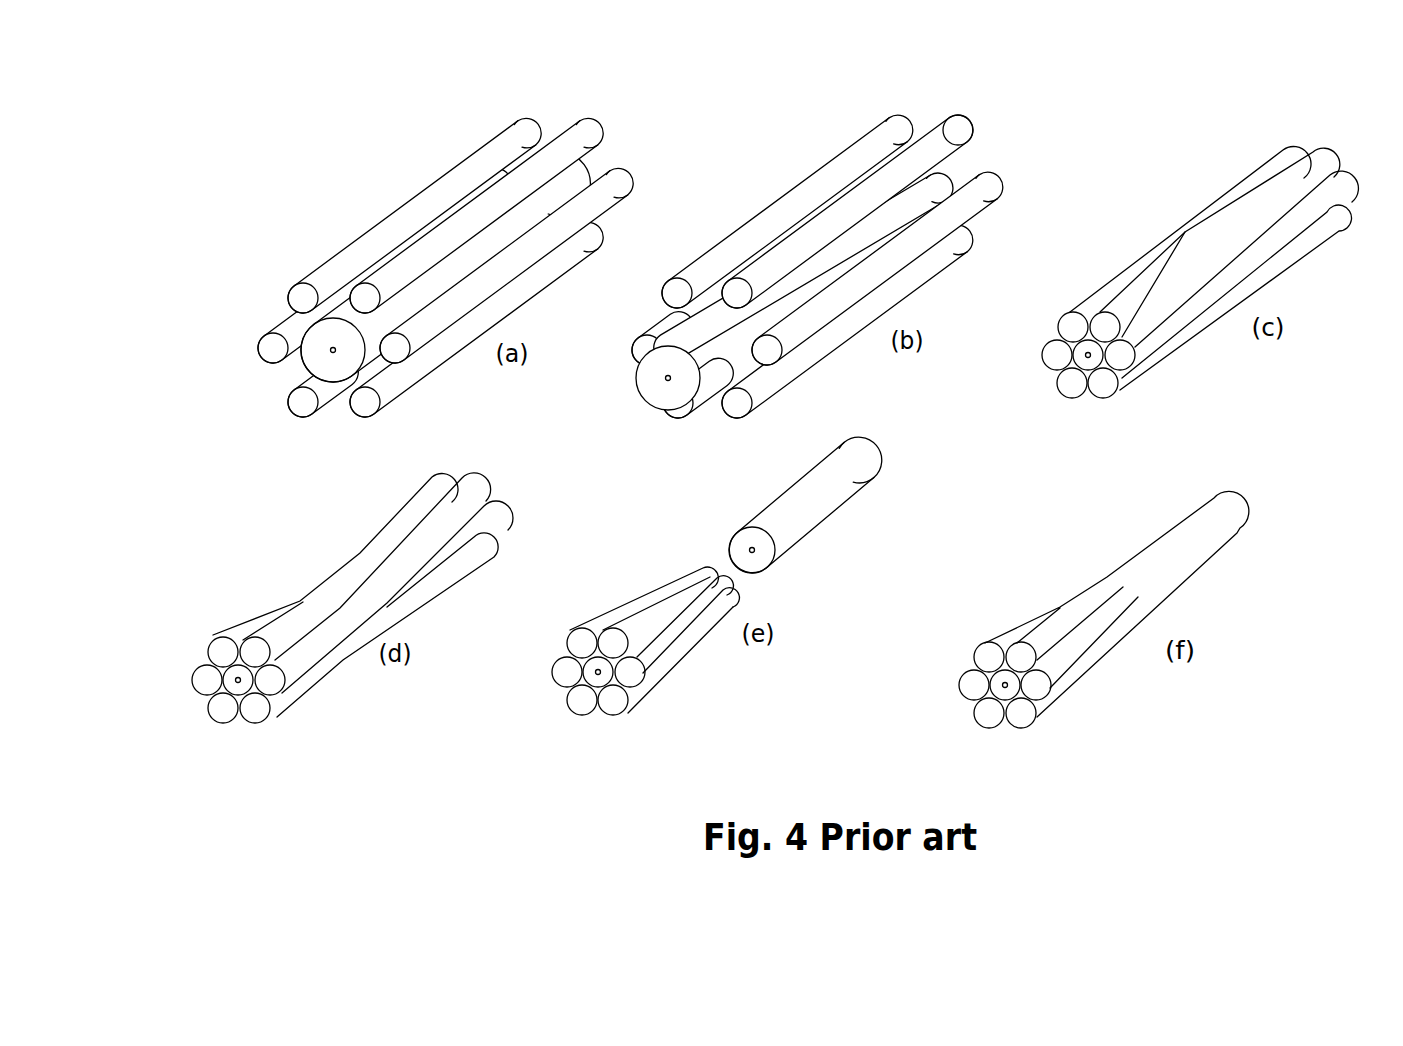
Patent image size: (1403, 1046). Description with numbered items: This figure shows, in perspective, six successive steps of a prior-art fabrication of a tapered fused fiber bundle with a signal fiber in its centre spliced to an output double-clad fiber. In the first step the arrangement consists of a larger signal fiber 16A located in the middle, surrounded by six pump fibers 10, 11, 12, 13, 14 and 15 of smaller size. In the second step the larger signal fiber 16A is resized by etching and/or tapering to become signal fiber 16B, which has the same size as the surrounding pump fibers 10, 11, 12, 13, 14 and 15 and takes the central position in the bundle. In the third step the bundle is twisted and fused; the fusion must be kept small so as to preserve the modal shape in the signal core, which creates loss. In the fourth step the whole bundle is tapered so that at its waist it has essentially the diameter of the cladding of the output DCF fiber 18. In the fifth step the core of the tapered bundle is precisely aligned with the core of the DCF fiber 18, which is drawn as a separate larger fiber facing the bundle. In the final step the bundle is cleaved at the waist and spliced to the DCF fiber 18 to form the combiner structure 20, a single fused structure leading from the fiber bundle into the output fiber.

The pump fiber 10 is at (360, 240).
The pump fiber 11 is at (592, 137).
The pump fiber 12 is at (618, 198).
The pump fiber 13 is at (547, 277).
The pump fiber 14 is at (327, 397).
The pump fiber 15 is at (283, 330).
The larger signal fiber 16A is at (313, 358).
The signal fiber 16B is at (960, 185).
The output DCF fiber 18 is at (827, 508).
The combiner structure 20 is at (1103, 549).